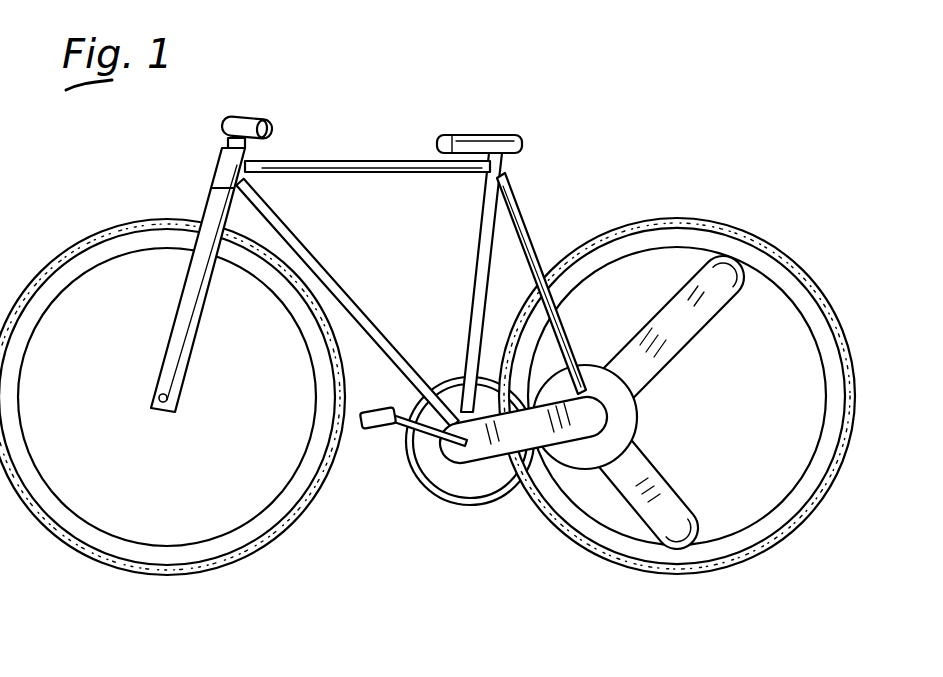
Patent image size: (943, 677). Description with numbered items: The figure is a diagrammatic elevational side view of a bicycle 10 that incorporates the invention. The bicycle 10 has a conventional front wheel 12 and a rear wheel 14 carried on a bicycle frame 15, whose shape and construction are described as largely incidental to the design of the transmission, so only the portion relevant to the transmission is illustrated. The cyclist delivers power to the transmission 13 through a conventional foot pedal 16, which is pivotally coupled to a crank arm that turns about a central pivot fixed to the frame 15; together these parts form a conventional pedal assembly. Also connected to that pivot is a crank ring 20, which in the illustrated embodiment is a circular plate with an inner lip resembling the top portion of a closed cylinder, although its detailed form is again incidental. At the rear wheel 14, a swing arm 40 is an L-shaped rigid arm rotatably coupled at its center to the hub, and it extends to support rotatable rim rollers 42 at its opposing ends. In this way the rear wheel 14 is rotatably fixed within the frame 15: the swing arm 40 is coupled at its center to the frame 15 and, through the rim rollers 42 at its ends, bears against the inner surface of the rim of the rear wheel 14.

The bicycle 10 is at (428, 112).
The front wheel 12 is at (298, 522).
The transmission 13 is at (534, 450).
The rear wheel 14 is at (701, 210).
The bicycle frame 15 is at (345, 160).
The foot pedal 16 is at (382, 432).
The crank ring 20 is at (458, 505).
The swing arm 40 is at (640, 453).
The rim rollers 42 is at (746, 272).